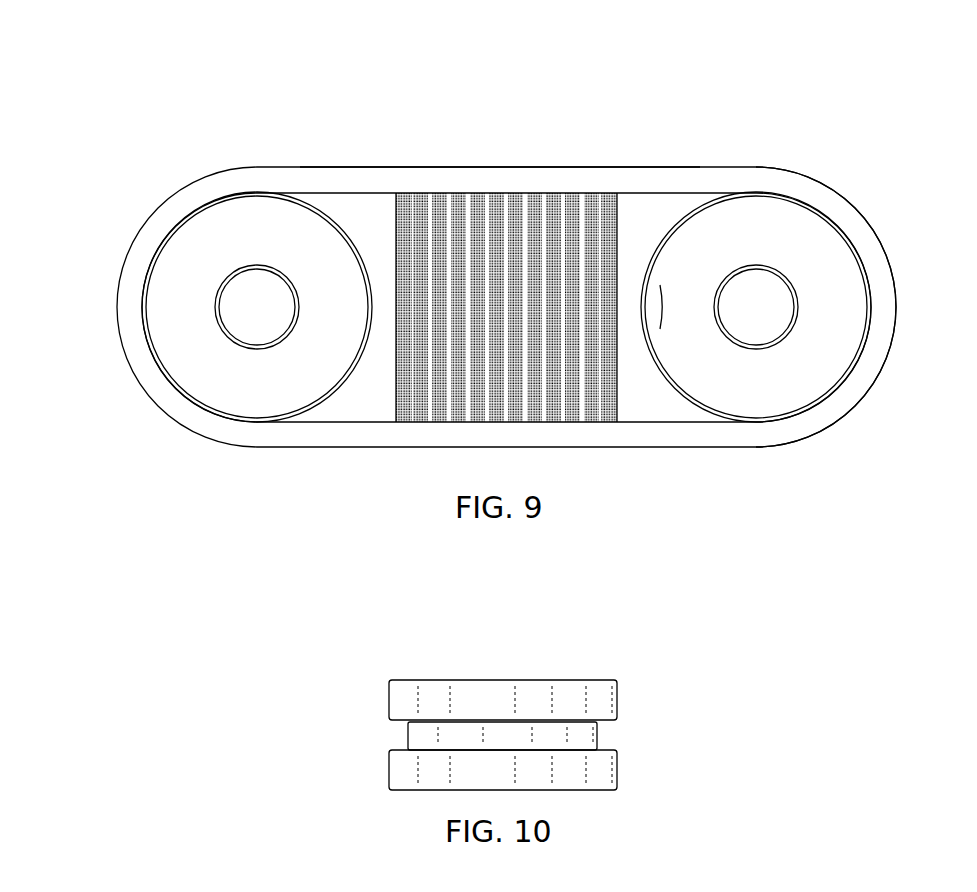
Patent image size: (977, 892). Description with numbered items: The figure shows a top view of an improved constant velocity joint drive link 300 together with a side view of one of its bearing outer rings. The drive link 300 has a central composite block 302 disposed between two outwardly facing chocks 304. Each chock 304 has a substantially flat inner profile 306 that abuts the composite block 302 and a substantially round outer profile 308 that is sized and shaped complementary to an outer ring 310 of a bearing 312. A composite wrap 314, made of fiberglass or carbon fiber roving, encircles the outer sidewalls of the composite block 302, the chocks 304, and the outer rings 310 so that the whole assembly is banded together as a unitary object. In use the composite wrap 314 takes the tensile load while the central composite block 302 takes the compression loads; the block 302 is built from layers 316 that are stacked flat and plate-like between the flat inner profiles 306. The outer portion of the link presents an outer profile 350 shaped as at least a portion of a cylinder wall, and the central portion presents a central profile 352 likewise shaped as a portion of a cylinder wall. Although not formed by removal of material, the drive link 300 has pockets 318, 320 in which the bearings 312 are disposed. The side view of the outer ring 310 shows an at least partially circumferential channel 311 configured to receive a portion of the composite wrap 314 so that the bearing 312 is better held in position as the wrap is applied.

In FIG. 9, the drive link 300 is at (276, 77).
In FIG. 10, the drive link 300 is at (467, 683).
In FIG. 9, the central composite block 302 is at (508, 314).
In FIG. 9, the chocks 304 is at (358, 402).
In FIG. 9, the flat inner profile 306 is at (396, 402).
In FIG. 9, the round outer profile 308 is at (320, 203).
In FIG. 9, the outer ring 310 is at (135, 355).
In FIG. 10, the outer ring 310 is at (389, 700).
In FIG. 10, the circumferential channel 311 is at (408, 735).
In FIG. 9, the bearings 312 is at (198, 196).
In FIG. 9, the composite wrap 314 is at (383, 168).
In FIG. 9, the layers 316 is at (447, 192).
In FIG. 9, the pocket 318 is at (165, 290).
In FIG. 9, the pocket 320 is at (843, 290).
In FIG. 9, the outer profile 350 is at (880, 222).
In FIG. 9, the central profile 352 is at (658, 226).